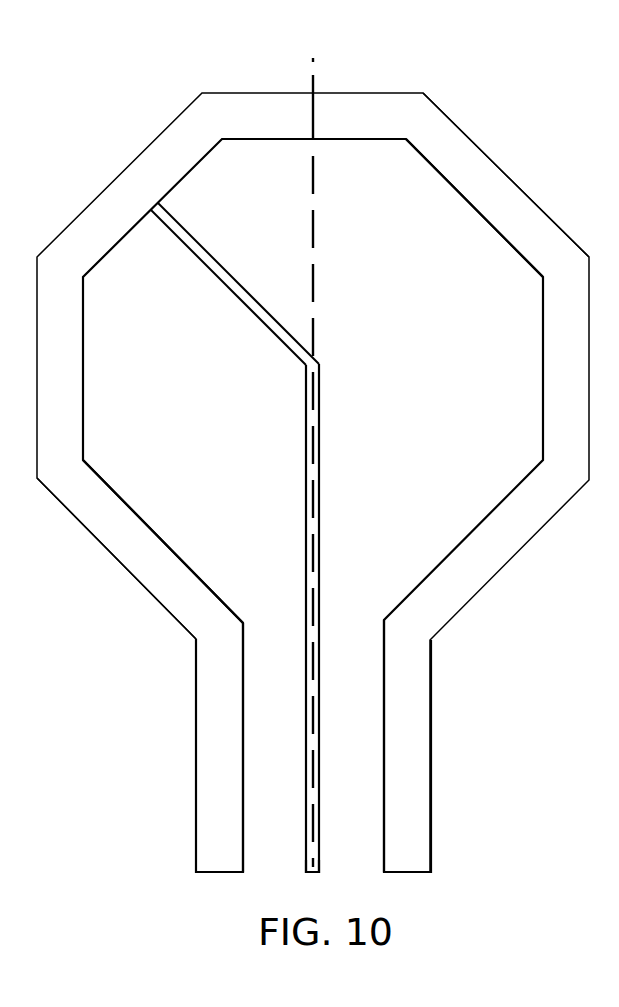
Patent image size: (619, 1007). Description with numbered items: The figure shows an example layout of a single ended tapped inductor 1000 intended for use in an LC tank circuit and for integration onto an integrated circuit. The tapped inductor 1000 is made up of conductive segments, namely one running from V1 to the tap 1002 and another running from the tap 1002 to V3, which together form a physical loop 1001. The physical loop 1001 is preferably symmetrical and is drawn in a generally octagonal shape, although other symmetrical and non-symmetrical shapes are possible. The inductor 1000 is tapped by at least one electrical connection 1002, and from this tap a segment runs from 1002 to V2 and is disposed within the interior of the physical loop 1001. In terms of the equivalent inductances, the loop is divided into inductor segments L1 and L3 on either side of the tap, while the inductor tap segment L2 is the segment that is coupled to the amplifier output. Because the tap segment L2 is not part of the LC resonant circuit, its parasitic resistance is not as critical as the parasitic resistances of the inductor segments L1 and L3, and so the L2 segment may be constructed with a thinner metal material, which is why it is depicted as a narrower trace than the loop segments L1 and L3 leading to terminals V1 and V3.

The single ended tapped inductor 1000 is at (325, 476).
The physical loop 1001 is at (548, 228).
The electrical connection (tap) 1002 is at (151, 208).
The inductor segment L1 is at (140, 549).
The inductor tap segment L2 is at (326, 618).
The inductor segment L3 is at (497, 185).
The terminal (end of first conductive segment) V1 is at (219, 761).
The terminal (end of tap segment) V2 is at (313, 880).
The terminal (end of second conductive segment) V3 is at (407, 760).